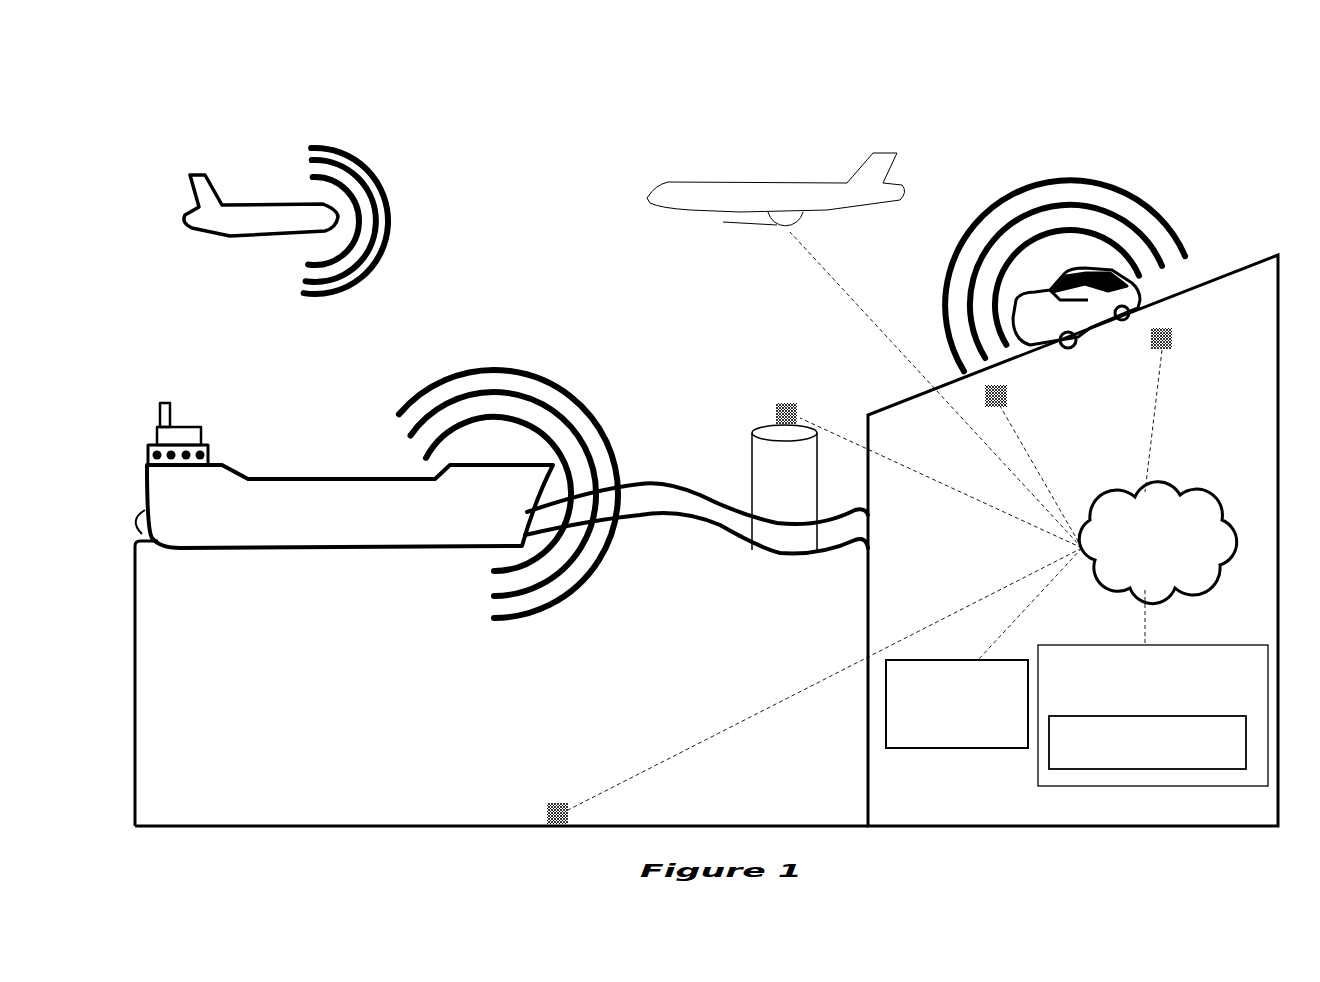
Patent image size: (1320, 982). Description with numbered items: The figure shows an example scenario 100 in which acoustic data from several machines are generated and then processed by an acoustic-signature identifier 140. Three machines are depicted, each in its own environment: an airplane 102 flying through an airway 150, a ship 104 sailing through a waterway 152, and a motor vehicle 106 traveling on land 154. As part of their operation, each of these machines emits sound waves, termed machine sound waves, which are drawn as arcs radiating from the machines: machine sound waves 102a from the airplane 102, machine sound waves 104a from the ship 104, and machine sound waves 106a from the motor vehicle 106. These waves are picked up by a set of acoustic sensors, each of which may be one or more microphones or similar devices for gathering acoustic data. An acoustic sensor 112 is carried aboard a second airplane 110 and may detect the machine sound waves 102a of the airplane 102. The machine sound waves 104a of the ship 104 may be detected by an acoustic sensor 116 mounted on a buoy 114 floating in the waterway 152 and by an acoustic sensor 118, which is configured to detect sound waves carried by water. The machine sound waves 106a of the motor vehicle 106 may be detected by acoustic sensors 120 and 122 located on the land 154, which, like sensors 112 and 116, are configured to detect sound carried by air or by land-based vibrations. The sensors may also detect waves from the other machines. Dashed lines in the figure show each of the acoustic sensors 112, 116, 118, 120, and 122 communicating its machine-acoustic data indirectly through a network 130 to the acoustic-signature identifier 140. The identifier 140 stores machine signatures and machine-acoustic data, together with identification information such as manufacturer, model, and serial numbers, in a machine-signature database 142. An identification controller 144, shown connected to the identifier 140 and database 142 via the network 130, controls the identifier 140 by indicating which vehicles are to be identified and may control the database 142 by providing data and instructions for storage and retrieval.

The scenario 100 is at (1203, 88).
The airplane 102 is at (287, 213).
The machine sound waves 102a is at (357, 162).
The ship 104 is at (302, 476).
The machine sound waves 104a is at (480, 368).
The motor vehicle 106 is at (1140, 310).
The machine sound waves 106a is at (1118, 190).
The airplane 110 is at (745, 187).
The acoustic sensor 112 is at (715, 224).
The buoy 114 is at (752, 470).
The acoustic sensor 116 is at (790, 402).
The acoustic sensor 118 is at (558, 803).
The acoustic sensor 120 is at (1008, 400).
The acoustic sensor 122 is at (1170, 350).
The network 130 is at (1136, 569).
The acoustic-signature identifier 140 is at (1170, 700).
The machine-signature database 142 is at (1213, 764).
The identification controller 144 is at (940, 738).
The airway 150 is at (159, 108).
The waterway 152 is at (193, 808).
The land 154 is at (925, 810).